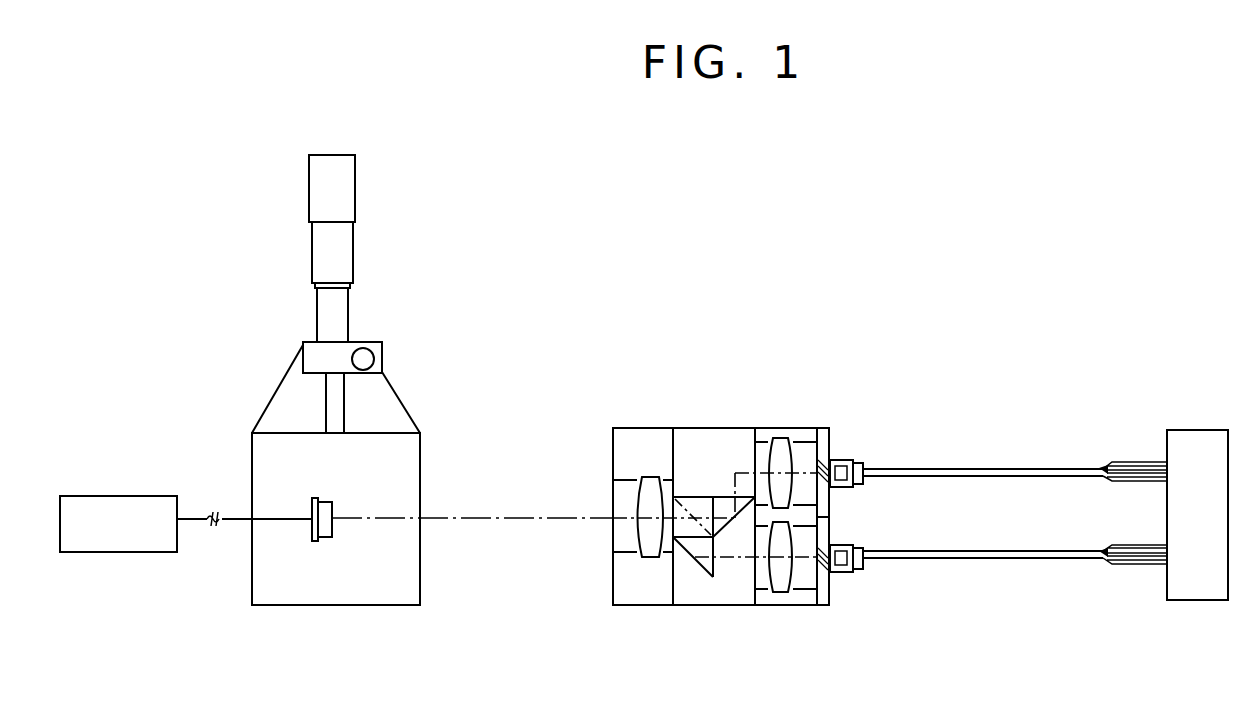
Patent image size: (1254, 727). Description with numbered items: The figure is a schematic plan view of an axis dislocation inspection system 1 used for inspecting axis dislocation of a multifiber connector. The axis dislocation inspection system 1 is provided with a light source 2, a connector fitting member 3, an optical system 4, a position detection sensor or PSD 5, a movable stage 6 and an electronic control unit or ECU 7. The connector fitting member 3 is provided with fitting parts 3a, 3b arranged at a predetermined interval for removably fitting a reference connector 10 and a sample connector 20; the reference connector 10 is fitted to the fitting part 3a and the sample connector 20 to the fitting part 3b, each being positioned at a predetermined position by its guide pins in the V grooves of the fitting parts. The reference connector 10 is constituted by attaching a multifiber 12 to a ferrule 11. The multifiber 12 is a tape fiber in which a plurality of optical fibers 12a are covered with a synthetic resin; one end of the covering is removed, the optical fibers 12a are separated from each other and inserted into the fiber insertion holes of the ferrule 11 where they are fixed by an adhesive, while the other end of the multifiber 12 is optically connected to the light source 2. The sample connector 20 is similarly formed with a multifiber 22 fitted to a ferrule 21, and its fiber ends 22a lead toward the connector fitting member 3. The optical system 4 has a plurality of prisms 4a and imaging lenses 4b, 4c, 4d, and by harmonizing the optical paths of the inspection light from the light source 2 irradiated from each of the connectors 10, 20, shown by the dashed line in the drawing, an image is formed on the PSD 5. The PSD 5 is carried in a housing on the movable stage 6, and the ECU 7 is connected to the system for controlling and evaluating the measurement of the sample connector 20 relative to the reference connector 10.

The axis dislocation inspection system 1 is at (736, 262).
The light source 2 is at (1198, 440).
The connector fitting member 3 is at (847, 523).
The fitting part 3a is at (822, 428).
The fitting part 3b is at (823, 605).
The optical system 4 is at (715, 525).
The prism 4a is at (755, 497).
The imaging lens 4b is at (650, 557).
The imaging lens 4c is at (780, 450).
The imaging lens 4d is at (780, 592).
The position detection sensor (PSD) 5 is at (325, 537).
The movable stage 6 is at (397, 407).
The electronic control unit (ECU) 7 is at (148, 496).
The reference connector 10 is at (872, 439).
The ferrule 11 is at (856, 488).
The multifiber 12 is at (1015, 419).
The optical fiber 12a is at (1142, 467).
The sample connector 20 is at (887, 601).
The ferrule 21 is at (852, 545).
The multifiber 22 is at (1015, 619).
The lower fiber bundle branched ends 22a is at (1150, 562).